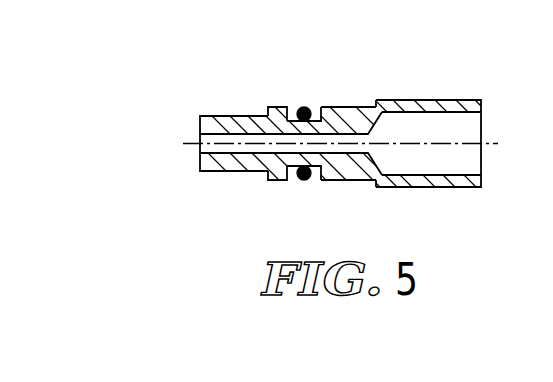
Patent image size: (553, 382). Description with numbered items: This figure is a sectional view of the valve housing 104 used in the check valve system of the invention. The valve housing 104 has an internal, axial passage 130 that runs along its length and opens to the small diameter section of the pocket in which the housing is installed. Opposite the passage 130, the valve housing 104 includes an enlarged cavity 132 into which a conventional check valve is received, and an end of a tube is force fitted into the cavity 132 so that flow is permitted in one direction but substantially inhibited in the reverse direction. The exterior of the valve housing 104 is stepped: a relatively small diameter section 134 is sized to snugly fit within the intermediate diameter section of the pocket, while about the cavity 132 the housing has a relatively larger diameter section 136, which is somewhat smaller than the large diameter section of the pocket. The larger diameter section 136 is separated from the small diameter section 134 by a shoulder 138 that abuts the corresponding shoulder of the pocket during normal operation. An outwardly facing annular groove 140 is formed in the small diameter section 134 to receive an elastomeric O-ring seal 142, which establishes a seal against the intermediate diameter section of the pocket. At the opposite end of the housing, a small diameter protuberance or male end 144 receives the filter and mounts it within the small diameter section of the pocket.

The valve housing 104 is at (342, 103).
The axial passage 130 is at (204, 147).
The enlarged cavity 132 is at (442, 113).
The small diameter section 134 is at (338, 181).
The larger diameter section 136 is at (470, 187).
The shoulder 138 is at (370, 182).
The annular groove 140 is at (315, 108).
The O-ring seal 142 is at (302, 106).
The male end 144 is at (231, 171).